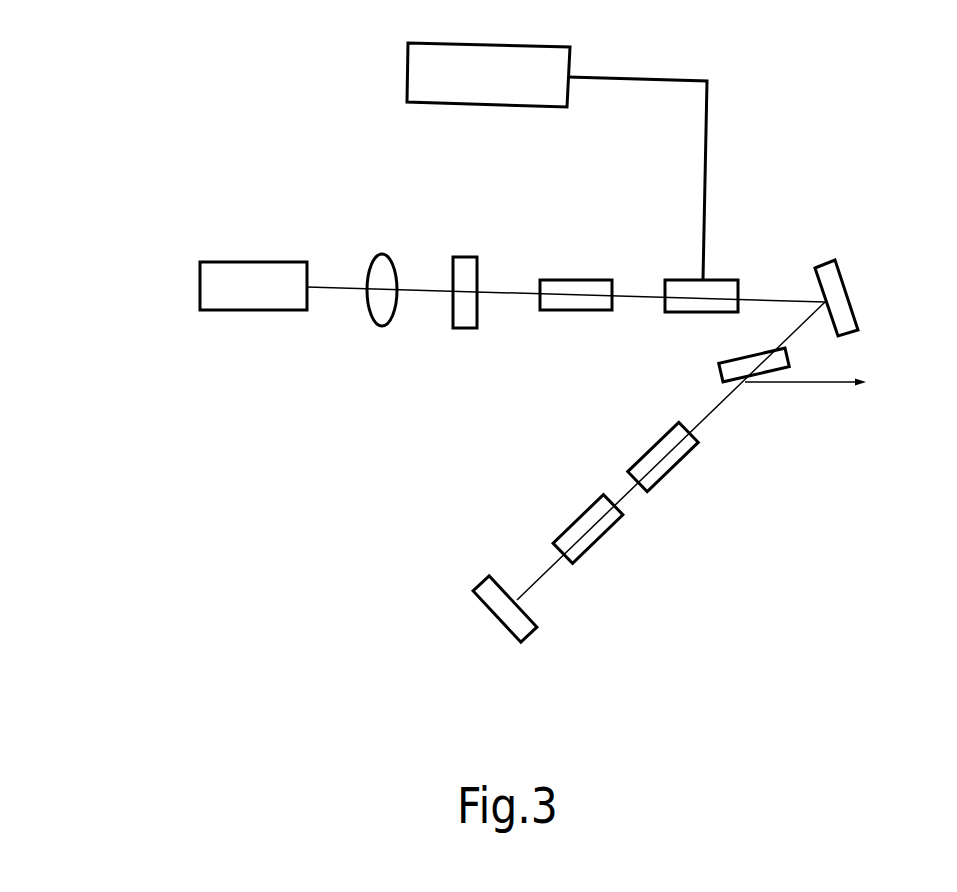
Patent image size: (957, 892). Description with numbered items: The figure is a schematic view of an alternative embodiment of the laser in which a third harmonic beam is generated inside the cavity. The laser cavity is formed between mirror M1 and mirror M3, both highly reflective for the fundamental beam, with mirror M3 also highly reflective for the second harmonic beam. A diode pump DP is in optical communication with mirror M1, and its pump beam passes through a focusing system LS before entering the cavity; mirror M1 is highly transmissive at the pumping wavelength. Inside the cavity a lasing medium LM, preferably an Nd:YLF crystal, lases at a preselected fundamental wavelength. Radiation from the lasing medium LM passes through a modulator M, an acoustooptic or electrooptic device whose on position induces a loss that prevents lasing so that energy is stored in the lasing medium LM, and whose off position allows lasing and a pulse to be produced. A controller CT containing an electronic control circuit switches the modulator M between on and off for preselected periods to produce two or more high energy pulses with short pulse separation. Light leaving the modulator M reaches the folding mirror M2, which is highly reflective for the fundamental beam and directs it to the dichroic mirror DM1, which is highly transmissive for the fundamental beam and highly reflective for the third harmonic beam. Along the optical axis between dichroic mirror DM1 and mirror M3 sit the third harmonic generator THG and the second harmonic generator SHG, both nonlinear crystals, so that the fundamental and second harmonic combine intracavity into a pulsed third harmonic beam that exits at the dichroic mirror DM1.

The controller CT is at (557, 161).
The diode pump DP is at (253, 255).
The focusing system LS is at (385, 264).
The mirror M1 is at (472, 265).
The lasing medium LM is at (576, 260).
The modulator M is at (706, 263).
The folding mirror M2 is at (864, 298).
The dichroic mirror DM1 is at (773, 387).
The third harmonic generator THG is at (695, 466).
The second harmonic generator SHG is at (615, 538).
The mirror M3 is at (493, 625).